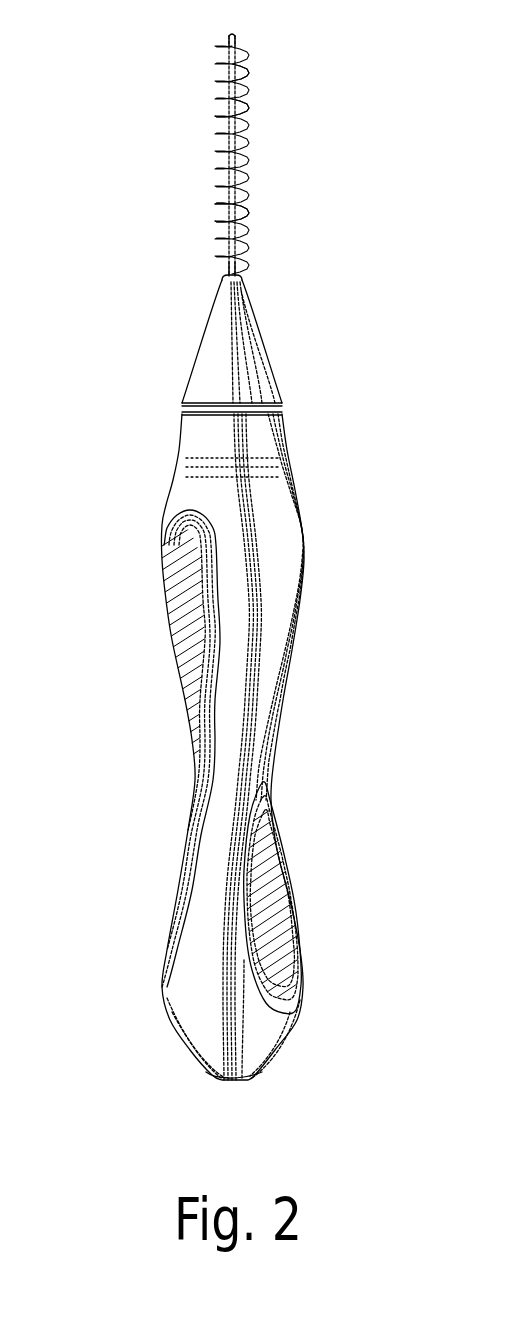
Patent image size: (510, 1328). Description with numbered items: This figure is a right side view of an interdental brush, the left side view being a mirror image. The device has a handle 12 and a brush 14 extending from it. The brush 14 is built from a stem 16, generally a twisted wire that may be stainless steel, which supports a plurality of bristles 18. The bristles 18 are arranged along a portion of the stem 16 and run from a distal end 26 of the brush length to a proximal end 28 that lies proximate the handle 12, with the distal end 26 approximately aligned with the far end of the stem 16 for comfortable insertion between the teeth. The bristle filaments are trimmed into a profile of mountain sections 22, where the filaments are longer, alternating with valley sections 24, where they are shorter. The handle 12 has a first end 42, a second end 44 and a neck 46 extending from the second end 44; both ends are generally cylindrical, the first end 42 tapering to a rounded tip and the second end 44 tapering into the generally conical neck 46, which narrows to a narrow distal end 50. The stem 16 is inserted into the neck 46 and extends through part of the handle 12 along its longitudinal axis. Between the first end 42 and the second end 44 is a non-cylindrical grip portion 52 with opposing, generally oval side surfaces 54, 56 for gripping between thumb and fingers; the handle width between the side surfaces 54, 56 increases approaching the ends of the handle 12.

The handle 12 is at (220, 753).
The brush 14 is at (225, 163).
The stem 16 is at (232, 198).
The bristles 18 is at (244, 75).
The mountain sections 22 is at (218, 222).
The valley sections 24 is at (225, 108).
The distal end of the brush length 26 is at (228, 35).
The proximal end of the brush length 28 is at (232, 264).
The first end 42 is at (255, 1072).
The second end 44 is at (188, 438).
The neck 46 is at (255, 368).
The narrow distal end 50 is at (242, 281).
The grip portion 52 is at (186, 614).
The side surface 54 is at (198, 670).
The side surface 56 is at (268, 870).